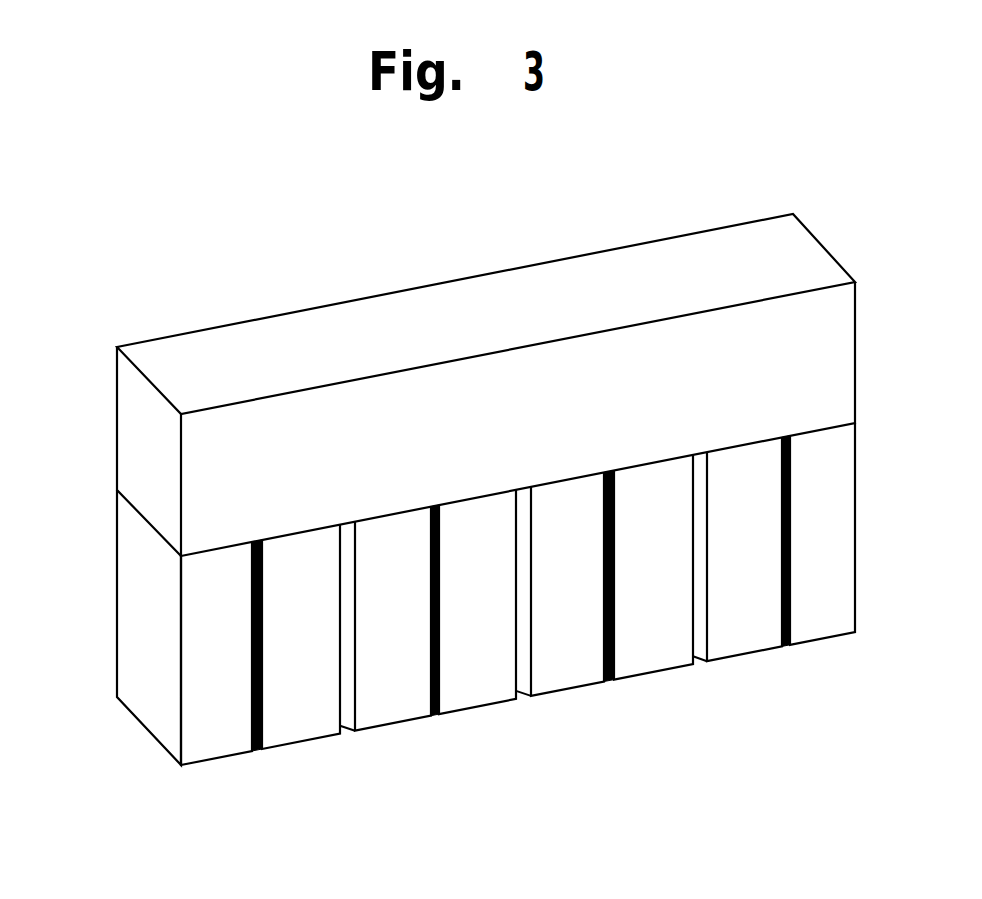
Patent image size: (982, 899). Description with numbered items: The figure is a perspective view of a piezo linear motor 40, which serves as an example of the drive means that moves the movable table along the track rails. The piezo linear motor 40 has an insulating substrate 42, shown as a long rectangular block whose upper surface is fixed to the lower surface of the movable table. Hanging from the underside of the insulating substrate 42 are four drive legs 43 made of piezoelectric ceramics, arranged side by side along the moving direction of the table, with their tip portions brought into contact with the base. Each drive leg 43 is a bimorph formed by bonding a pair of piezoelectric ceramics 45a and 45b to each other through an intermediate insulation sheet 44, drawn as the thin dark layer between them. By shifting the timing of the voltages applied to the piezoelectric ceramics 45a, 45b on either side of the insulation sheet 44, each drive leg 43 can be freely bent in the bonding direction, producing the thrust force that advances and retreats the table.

The piezo linear motor 40 is at (441, 279).
The insulating substrate 42 is at (688, 253).
The drive leg 43 is at (450, 650).
The insulation sheet 44 is at (258, 643).
The piezoelectric ceramic 45a is at (223, 758).
The piezoelectric ceramic 45b is at (297, 743).